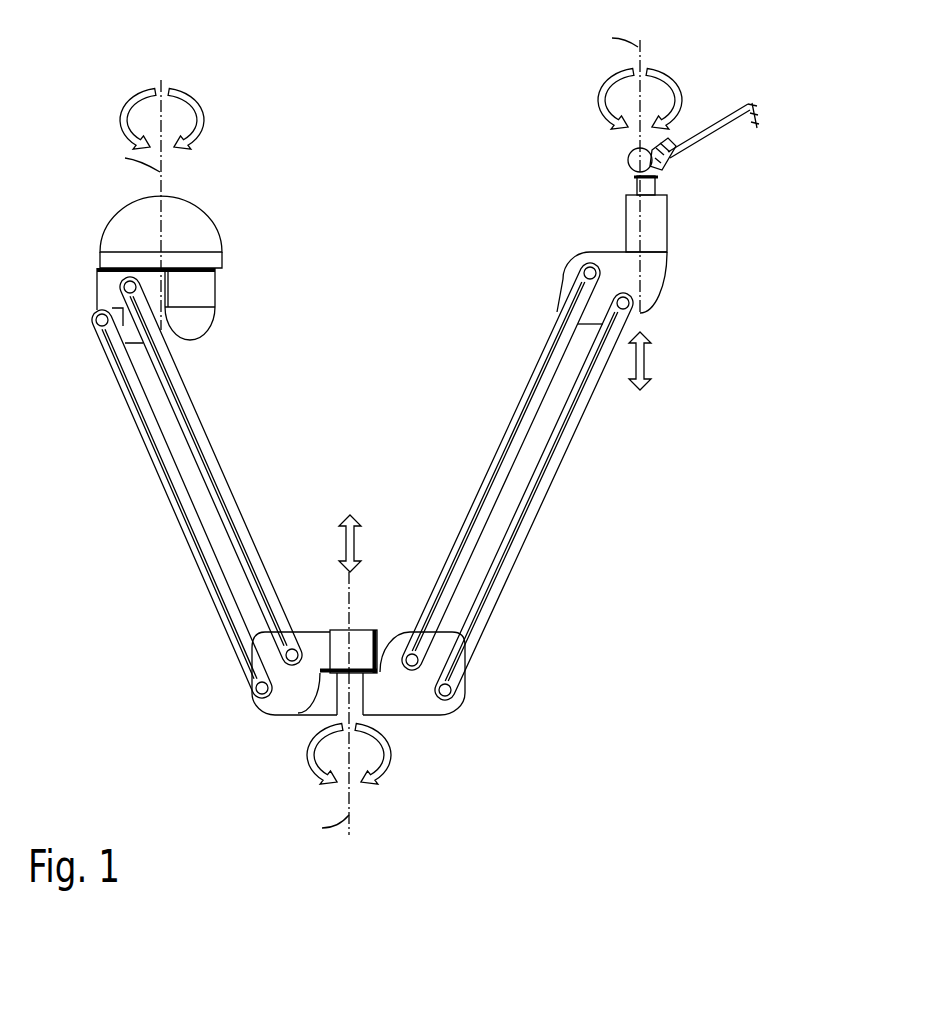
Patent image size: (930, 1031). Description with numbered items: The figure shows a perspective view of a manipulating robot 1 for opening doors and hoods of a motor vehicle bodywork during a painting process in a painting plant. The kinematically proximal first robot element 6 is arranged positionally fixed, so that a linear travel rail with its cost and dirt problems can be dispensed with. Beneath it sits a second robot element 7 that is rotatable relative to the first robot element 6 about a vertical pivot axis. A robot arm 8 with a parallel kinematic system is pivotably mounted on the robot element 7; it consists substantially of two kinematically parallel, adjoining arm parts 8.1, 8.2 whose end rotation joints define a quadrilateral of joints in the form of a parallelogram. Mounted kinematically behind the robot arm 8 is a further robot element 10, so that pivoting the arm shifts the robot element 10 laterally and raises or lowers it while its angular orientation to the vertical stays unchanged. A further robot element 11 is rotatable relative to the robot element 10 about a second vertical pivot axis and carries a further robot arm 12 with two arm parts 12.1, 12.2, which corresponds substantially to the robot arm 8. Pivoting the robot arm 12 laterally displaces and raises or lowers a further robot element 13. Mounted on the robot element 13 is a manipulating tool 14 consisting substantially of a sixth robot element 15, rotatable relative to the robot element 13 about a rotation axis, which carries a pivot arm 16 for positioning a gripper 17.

The manipulating robot 1 is at (466, 895).
The first robot element 6 is at (195, 238).
The second robot element 7 is at (195, 291).
The robot arm 8 is at (145, 498).
The arm part 8.1 is at (205, 458).
The arm part 8.2 is at (140, 415).
The robot element 10 is at (318, 630).
The robot element 11 is at (407, 697).
The robot arm 12 is at (572, 490).
The arm part 12.1 is at (510, 447).
The arm part 12.2 is at (470, 640).
The robot element 13 is at (650, 286).
The manipulating tool 14 is at (604, 187).
The sixth robot element 15 is at (655, 226).
The pivot arm 16 is at (700, 130).
The gripper 17 is at (748, 120).